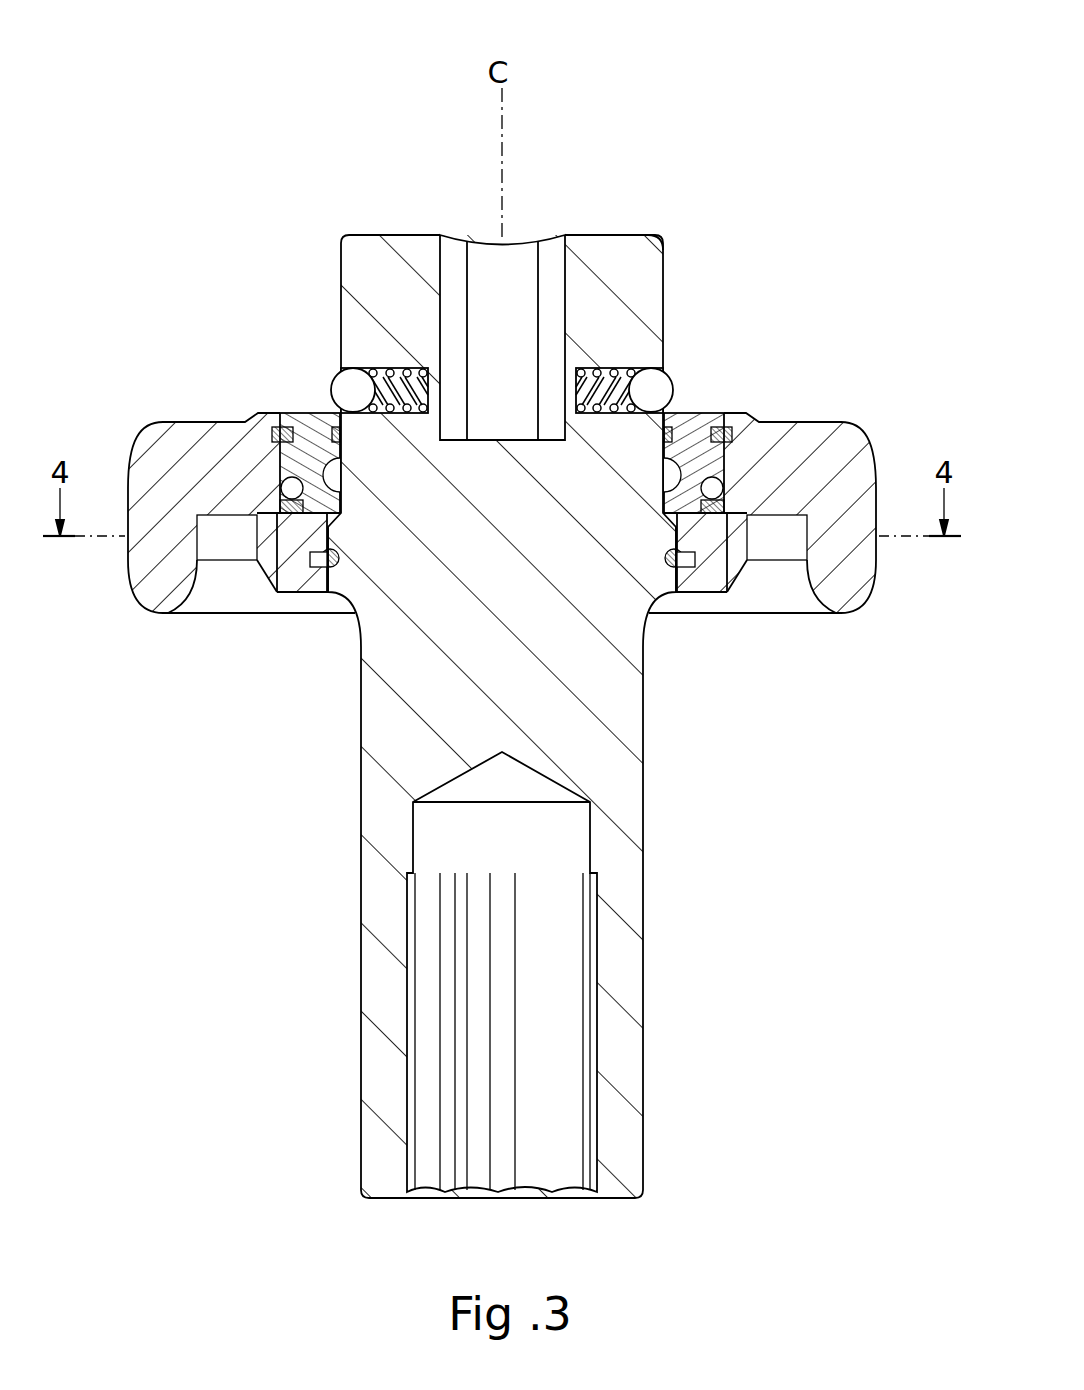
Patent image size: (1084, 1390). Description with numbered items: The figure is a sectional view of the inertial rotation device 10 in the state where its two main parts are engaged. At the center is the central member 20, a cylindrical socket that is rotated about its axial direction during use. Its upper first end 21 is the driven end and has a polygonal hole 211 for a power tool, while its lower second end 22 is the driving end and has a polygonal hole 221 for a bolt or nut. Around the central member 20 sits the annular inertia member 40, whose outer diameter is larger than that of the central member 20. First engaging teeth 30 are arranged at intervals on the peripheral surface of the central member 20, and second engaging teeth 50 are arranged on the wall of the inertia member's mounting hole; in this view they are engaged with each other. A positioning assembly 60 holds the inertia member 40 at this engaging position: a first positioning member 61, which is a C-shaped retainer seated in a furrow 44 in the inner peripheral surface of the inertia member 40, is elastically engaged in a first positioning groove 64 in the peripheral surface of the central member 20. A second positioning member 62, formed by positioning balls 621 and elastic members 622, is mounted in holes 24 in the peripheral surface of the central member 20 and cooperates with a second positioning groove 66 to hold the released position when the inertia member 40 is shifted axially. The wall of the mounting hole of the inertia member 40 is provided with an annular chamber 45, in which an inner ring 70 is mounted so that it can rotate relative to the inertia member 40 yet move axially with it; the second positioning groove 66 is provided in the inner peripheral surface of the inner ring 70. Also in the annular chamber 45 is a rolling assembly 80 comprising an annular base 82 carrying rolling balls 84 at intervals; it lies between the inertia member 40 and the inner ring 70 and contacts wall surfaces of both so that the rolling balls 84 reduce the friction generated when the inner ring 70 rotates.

The inertial rotation device 10 is at (421, 162).
The central member 20 is at (645, 222).
The first end 21 is at (664, 250).
The polygonal hole 211 is at (552, 265).
The second end 22 is at (648, 913).
The polygonal hole 221 is at (552, 1143).
The hole 24 is at (605, 366).
The first engaging teeth 30 is at (330, 588).
The second engaging teeth 50 is at (382, 660).
The inertia member 40 is at (174, 412).
The furrow 44 is at (645, 645).
The annular chamber 45 is at (263, 470).
The positioning assembly 60 is at (320, 568).
The first positioning member 61 is at (690, 560).
The second positioning member 62 is at (666, 372).
The positioning ball 621 is at (345, 380).
The elastic member 622 is at (398, 367).
The first positioning groove 64 is at (672, 566).
The second positioning groove 66 is at (313, 462).
The inner ring 70 is at (702, 428).
The rolling assembly 80 is at (729, 504).
The annular base 82 is at (288, 508).
The rolling balls 84 is at (292, 488).